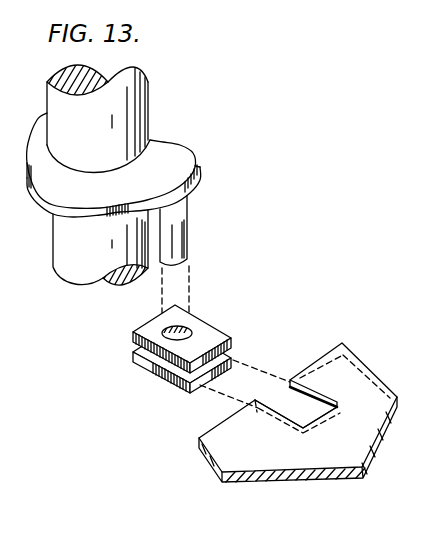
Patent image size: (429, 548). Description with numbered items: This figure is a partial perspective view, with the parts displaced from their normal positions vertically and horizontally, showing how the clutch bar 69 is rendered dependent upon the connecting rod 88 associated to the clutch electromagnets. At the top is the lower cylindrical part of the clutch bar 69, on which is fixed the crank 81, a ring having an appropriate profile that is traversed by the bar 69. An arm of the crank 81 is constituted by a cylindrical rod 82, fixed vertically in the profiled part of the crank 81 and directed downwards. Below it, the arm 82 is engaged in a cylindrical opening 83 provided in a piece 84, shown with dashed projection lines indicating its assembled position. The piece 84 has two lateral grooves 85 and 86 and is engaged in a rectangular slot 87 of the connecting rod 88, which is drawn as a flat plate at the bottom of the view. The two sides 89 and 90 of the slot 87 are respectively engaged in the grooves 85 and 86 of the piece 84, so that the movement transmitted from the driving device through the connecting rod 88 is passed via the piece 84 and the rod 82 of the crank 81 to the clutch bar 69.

The clutch bar 69 is at (130, 77).
The crank 81 is at (168, 157).
The cylindrical rod 82 is at (173, 246).
The cylindrical opening 83 is at (181, 328).
The piece 84 is at (164, 333).
The lateral groove 85 is at (160, 368).
The lateral groove 86 is at (230, 357).
The rectangular slot 87 is at (281, 412).
The connecting rod 88 is at (215, 462).
The side of the slot 89 is at (292, 405).
The side of the slot 90 is at (282, 416).